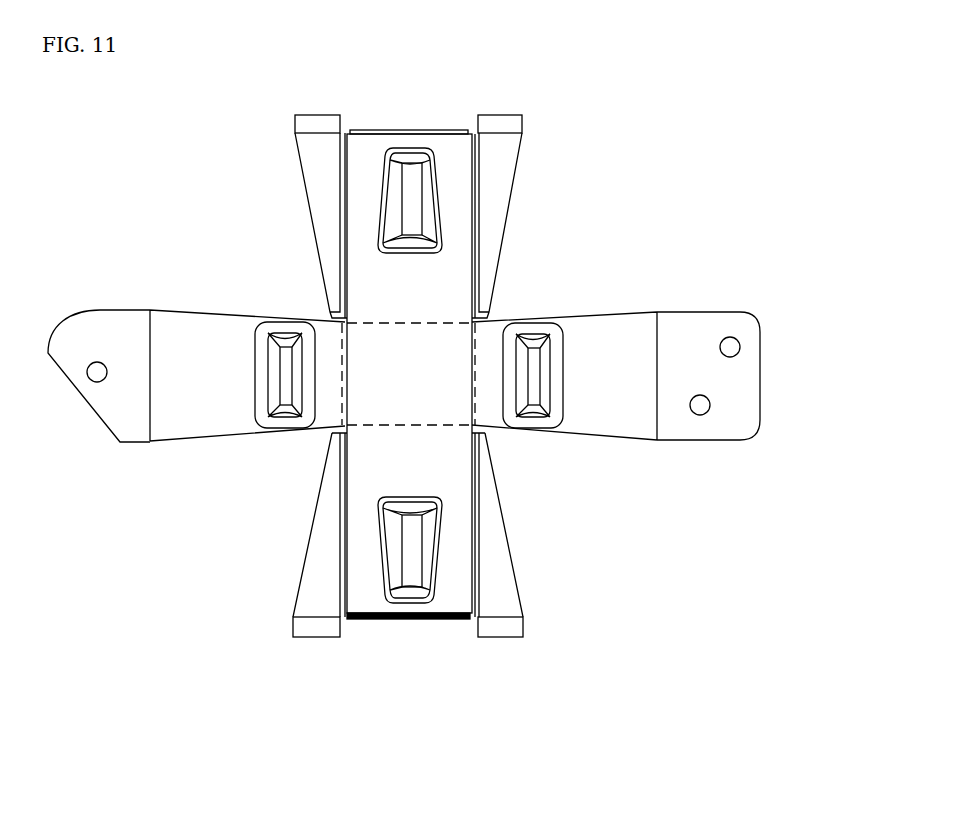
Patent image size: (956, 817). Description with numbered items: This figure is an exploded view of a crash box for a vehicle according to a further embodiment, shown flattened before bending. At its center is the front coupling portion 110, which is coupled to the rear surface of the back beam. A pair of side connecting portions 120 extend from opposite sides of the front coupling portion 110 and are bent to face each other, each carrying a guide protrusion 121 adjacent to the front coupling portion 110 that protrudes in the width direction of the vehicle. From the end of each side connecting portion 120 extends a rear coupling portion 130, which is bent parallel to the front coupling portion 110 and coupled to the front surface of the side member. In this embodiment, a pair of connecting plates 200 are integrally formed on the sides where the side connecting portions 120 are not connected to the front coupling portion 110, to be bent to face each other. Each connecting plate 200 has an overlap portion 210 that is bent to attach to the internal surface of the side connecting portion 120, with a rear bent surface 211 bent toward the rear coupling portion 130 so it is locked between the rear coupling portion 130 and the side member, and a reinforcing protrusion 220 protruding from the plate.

The front coupling portion 110 is at (408, 365).
The side connecting portion 120 is at (664, 420).
The guide protrusion 121 is at (533, 428).
The rear coupling portion 130 is at (738, 380).
The connecting plate 200 is at (362, 583).
The overlap portion 210 is at (540, 582).
The rear bent surface 211 is at (505, 628).
The reinforcing protrusion 220 is at (408, 583).